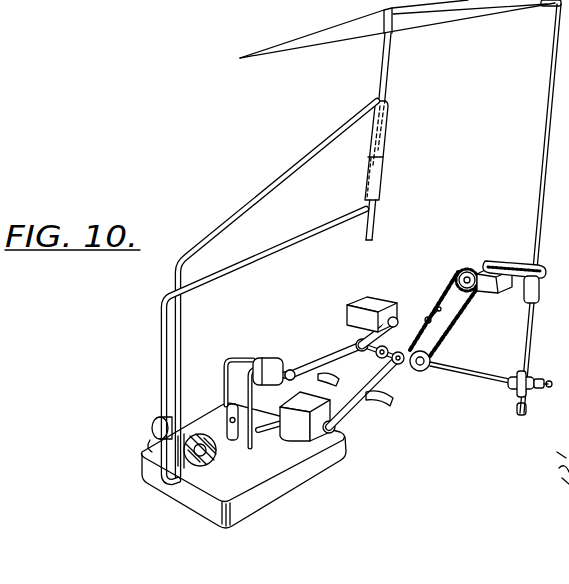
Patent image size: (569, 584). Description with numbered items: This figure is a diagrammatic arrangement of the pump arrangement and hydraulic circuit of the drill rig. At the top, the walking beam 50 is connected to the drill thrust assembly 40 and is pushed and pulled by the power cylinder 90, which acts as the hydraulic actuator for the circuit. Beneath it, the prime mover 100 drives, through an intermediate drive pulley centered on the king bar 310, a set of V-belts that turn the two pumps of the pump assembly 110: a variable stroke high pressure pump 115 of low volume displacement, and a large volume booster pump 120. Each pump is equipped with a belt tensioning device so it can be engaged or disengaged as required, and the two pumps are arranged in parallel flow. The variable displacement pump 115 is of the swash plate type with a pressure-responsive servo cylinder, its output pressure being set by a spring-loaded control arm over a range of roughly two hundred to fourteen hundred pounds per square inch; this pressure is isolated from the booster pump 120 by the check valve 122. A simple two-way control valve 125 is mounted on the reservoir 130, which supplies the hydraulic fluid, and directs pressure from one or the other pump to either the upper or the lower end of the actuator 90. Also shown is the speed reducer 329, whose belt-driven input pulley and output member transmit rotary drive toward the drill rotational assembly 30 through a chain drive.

The drill rotational assembly 30 is at (520, 260).
The drill thrust assembly 40 is at (543, 12).
The walking beam 50 is at (415, 28).
The power cylinder 90 is at (387, 125).
The prime mover 100 is at (387, 297).
The pump assembly 110 is at (213, 377).
The variable displacement pump 115 is at (376, 456).
The booster pump 120 is at (263, 353).
The check valve 122 is at (232, 423).
The two-way control valve 125 is at (192, 455).
The reservoir 130 is at (141, 457).
The king bar 310 is at (475, 377).
The speed reducer 329 is at (487, 287).